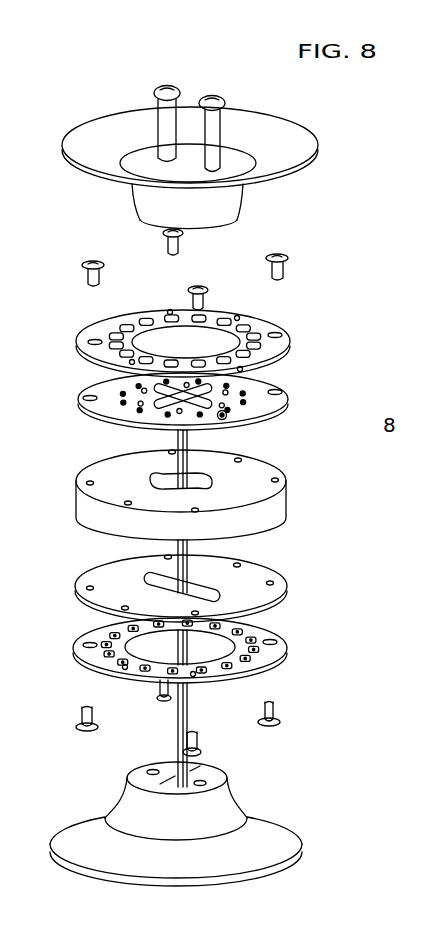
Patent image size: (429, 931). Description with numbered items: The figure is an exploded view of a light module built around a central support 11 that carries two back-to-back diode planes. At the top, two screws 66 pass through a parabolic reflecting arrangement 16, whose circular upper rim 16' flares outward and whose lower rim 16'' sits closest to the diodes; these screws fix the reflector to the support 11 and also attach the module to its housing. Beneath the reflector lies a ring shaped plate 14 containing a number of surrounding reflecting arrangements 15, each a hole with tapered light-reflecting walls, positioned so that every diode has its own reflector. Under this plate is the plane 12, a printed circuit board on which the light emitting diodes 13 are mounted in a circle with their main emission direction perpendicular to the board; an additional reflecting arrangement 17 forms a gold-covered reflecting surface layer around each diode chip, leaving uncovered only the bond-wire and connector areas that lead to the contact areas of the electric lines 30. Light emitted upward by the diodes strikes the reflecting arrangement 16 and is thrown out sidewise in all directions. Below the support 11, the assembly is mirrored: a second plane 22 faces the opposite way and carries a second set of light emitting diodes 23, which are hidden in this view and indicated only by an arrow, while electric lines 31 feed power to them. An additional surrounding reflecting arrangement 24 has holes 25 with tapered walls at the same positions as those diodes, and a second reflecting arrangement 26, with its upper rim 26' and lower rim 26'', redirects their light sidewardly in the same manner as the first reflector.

The screws 66 is at (153, 108).
The reflecting arrangement 16 is at (212, 183).
The upper rim 16' is at (214, 147).
The lower rim 16'' is at (142, 230).
The ring shaped plate 14 is at (102, 327).
The surrounding reflecting arrangements 15 is at (147, 327).
The plane 12 is at (102, 378).
The light emitting diodes 13 is at (118, 393).
The additional reflecting arrangement 17 is at (224, 417).
The electric lines 30 is at (178, 466).
The support 11 is at (277, 508).
The second plane 22 is at (255, 575).
The light emitting diodes 23 is at (267, 613).
The additional surrounding reflecting arrangement 24 is at (262, 655).
The holes 25 is at (102, 663).
The electric lines 31 is at (178, 732).
The second reflecting arrangement 26 is at (154, 808).
The upper rim 26' is at (207, 847).
The lower rim 26'' is at (208, 776).